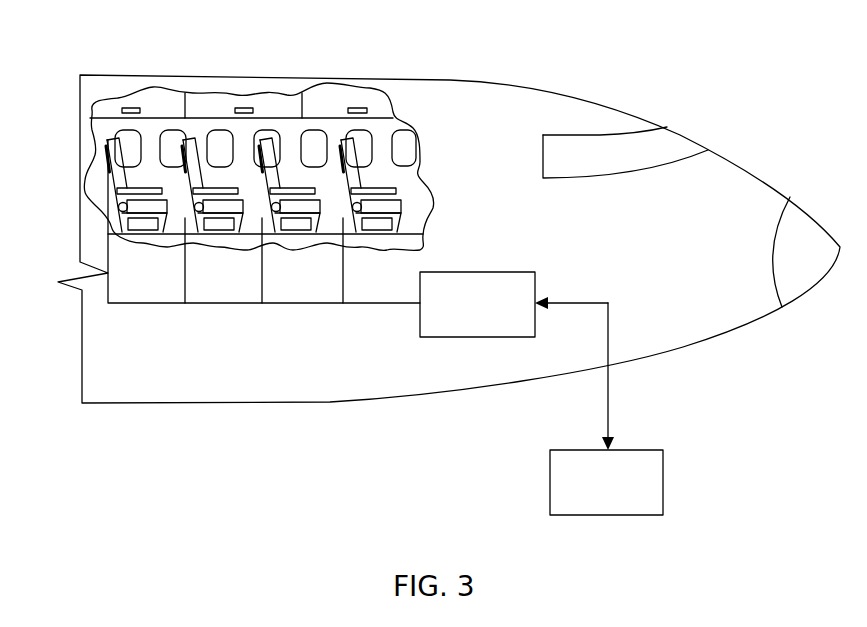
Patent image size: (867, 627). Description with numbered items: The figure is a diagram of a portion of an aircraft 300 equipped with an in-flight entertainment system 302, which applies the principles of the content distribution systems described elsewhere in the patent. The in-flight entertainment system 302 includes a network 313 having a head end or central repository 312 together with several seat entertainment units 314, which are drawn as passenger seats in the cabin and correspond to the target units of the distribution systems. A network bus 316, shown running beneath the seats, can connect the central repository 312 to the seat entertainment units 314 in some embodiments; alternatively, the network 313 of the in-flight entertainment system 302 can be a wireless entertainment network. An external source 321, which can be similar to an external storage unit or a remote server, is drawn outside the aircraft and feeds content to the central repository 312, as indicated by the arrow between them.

The aircraft 300 is at (684, 96).
The in-flight entertainment system 302 is at (442, 157).
The central repository 312 is at (520, 272).
The network 313 is at (440, 250).
The seat entertainment units 314 is at (106, 154).
The network bus 316 is at (300, 305).
The external source 321 is at (647, 450).